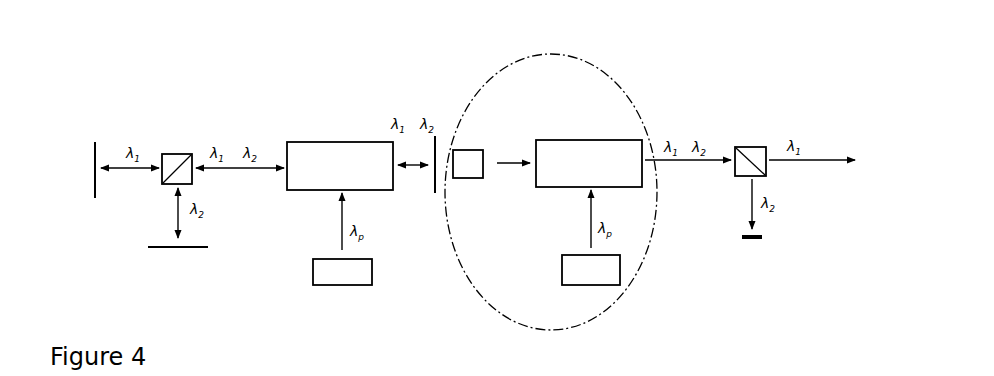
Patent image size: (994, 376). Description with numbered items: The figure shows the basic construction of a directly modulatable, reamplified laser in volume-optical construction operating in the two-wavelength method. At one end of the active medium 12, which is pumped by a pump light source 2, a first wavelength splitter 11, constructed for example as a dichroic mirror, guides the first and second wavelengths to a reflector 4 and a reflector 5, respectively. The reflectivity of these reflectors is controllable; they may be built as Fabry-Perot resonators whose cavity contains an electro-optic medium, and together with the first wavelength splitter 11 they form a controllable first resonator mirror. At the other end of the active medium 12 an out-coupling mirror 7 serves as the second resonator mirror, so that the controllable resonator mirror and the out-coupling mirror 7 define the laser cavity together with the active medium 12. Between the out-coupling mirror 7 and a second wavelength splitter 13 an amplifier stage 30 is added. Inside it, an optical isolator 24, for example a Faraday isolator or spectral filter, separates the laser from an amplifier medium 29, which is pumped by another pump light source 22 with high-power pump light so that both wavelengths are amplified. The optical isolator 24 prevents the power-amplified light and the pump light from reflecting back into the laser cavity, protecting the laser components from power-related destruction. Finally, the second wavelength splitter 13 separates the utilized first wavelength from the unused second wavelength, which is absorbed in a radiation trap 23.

The pump light source 2 is at (357, 285).
The reflector 4 is at (96, 202).
The reflector 5 is at (180, 252).
The out-coupling mirror 7 is at (437, 198).
The first wavelength splitter 11 is at (170, 153).
The active medium 12 is at (332, 142).
The second wavelength splitter 13 is at (752, 147).
The pump light source 22 is at (608, 285).
The radiation trap 23 is at (757, 245).
The optical isolator 24 is at (468, 150).
The amplifier medium 29 is at (607, 140).
The amplifier stage 30 is at (592, 65).